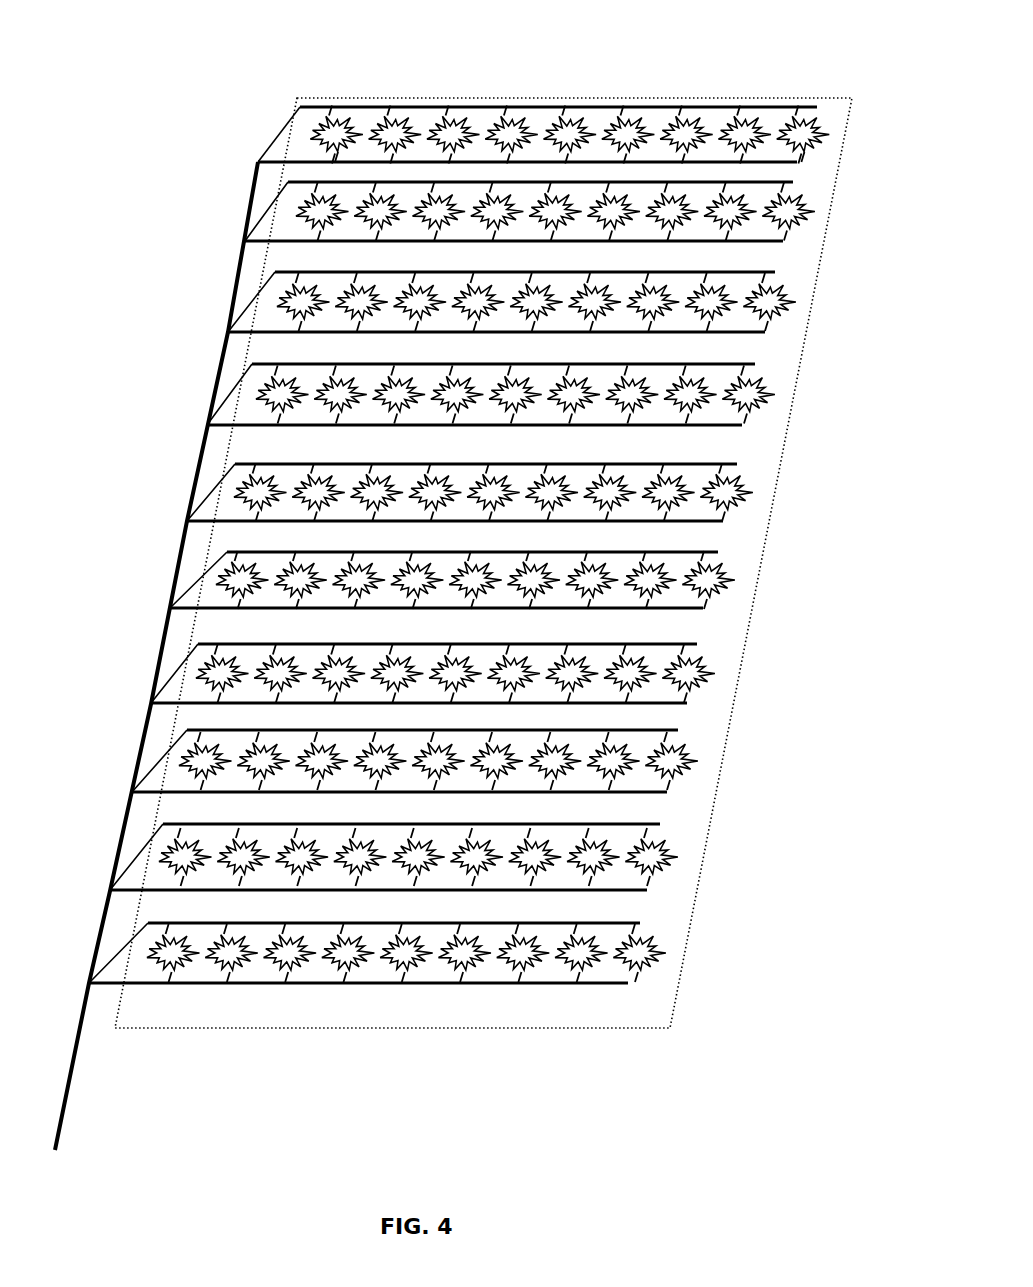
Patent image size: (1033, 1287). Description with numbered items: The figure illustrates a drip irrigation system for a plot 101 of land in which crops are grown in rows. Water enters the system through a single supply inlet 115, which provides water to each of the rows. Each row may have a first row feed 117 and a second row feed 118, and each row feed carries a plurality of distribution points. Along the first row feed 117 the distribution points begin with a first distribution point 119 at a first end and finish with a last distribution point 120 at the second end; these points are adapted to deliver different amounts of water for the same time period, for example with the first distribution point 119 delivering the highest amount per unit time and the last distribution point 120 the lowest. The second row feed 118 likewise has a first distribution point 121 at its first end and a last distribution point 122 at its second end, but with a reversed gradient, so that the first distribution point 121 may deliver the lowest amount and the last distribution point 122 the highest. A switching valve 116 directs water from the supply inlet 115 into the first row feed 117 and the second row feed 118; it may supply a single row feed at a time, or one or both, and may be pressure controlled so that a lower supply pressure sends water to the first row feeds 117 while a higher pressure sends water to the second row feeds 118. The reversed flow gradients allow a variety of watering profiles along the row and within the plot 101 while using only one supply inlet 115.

The plot 101 is at (640, 98).
The supply inlet 115 is at (70, 1082).
The switching valve 116 is at (258, 162).
The first row feed 117 is at (470, 107).
The second row feed 118 is at (282, 163).
The first distribution point 119 is at (333, 113).
The last distribution point 120 is at (812, 113).
The first distribution point 121 is at (342, 150).
The last distribution point 122 is at (798, 150).